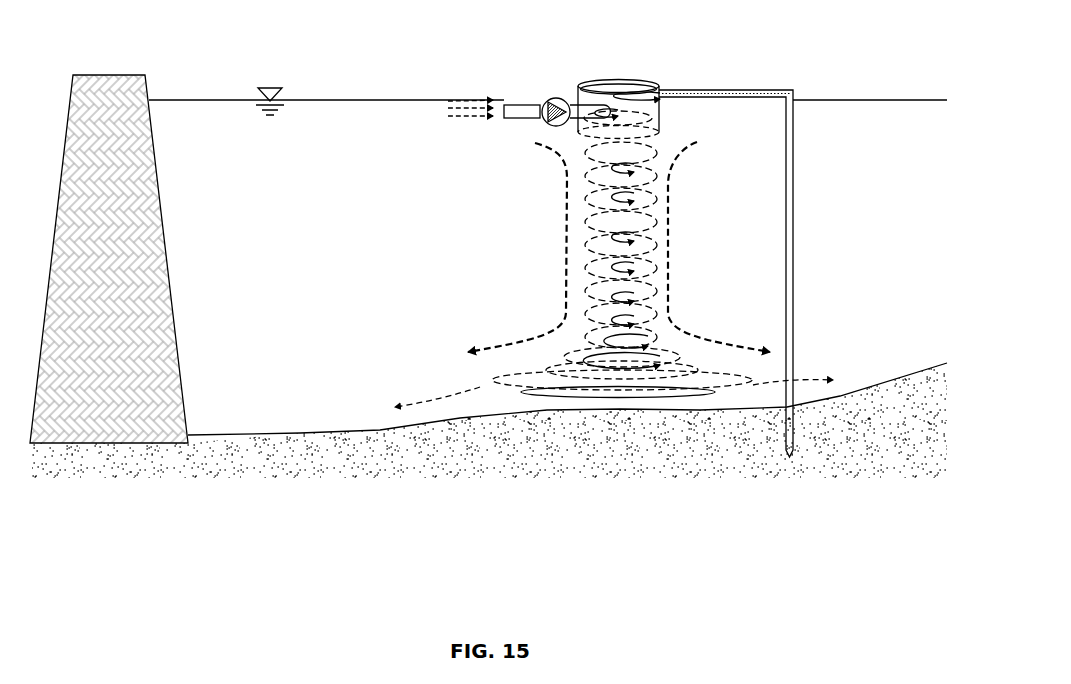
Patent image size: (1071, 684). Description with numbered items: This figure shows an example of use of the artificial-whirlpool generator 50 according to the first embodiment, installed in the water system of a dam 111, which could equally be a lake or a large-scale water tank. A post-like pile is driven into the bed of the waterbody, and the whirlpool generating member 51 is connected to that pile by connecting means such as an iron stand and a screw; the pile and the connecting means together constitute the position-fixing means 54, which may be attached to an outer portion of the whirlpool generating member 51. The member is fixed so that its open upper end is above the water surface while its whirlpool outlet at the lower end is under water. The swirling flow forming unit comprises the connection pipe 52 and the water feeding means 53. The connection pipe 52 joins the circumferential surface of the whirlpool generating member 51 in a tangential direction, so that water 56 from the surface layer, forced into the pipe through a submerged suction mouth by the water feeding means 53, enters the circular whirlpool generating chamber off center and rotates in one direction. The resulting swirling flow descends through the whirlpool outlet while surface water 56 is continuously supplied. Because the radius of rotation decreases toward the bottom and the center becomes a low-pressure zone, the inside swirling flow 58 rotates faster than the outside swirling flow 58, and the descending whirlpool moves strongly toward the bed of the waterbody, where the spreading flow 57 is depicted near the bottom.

The dam 111 is at (108, 75).
The artificial-whirlpool generator 50 is at (647, 235).
The whirlpool generating member 51 is at (600, 79).
The connection pipe 52 is at (515, 105).
The water feeding means 53 is at (557, 98).
The position-fixing means 54 is at (739, 88).
The water in the surface layer 56 is at (466, 103).
The spreading vortex flow 57 is at (731, 392).
The swirling flow 58 is at (540, 386).